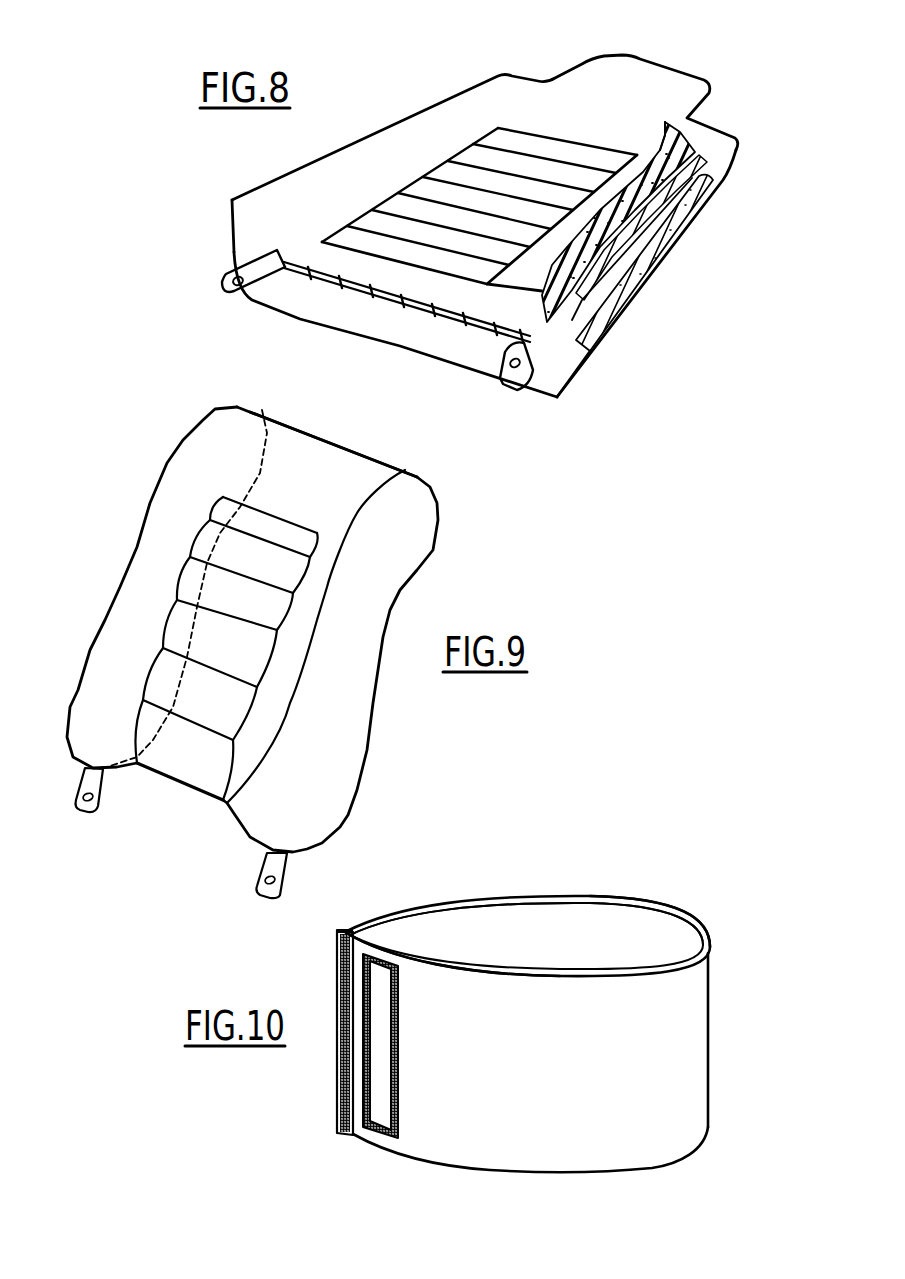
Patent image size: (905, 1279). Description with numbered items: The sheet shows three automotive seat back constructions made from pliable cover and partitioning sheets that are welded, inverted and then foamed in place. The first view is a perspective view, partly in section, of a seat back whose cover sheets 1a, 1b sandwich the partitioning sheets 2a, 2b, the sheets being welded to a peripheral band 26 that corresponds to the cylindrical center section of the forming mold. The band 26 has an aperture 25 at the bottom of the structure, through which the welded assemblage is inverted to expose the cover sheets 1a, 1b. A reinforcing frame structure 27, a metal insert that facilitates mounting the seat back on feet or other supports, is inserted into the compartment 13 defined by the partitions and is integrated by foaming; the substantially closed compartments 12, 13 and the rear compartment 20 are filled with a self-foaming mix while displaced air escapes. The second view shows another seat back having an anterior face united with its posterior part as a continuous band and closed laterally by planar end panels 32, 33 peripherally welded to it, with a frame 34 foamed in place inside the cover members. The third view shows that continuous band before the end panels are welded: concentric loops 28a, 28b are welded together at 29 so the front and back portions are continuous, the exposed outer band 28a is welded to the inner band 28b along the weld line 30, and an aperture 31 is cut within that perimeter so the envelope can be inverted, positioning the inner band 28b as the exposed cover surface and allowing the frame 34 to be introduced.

In FIG. 8, the cover sheet 1a is at (455, 372).
In FIG. 9, the cover sheet 1a is at (267, 503).
In FIG. 10, the cover sheet 1a is at (458, 968).
In FIG. 8, the cover sheet 1b is at (390, 158).
In FIG. 9, the cover sheet 1b is at (187, 630).
In FIG. 10, the cover sheet 1b is at (574, 908).
In FIG. 8, the partitioning sheet 2a is at (678, 217).
In FIG. 10, the partitioning sheet 2a is at (497, 975).
In FIG. 8, the partitioning sheet 2b is at (658, 190).
In FIG. 10, the partitioning sheet 2b is at (607, 902).
In FIG. 8, the compartment 12 is at (665, 122).
In FIG. 8, the compartment 13 is at (650, 222).
In FIG. 8, the rear compartment 20 is at (623, 292).
In FIG. 8, the aperture 25 is at (322, 270).
In FIG. 8, the peripheral band 26 is at (655, 276).
In FIG. 8, the reinforcing frame structure 27 is at (228, 291).
In FIG. 10, the outer band 28a is at (648, 1060).
In FIG. 9, the inner band 28b is at (347, 447).
In FIG. 10, the inner band 28b is at (690, 928).
In FIG. 10, the weld 29 is at (347, 1073).
In FIG. 10, the weld line 30 is at (396, 1040).
In FIG. 10, the aperture 31 is at (378, 1080).
In FIG. 9, the end panel 32 is at (333, 705).
In FIG. 9, the end panel 33 is at (127, 556).
In FIG. 9, the frame 34 is at (80, 807).